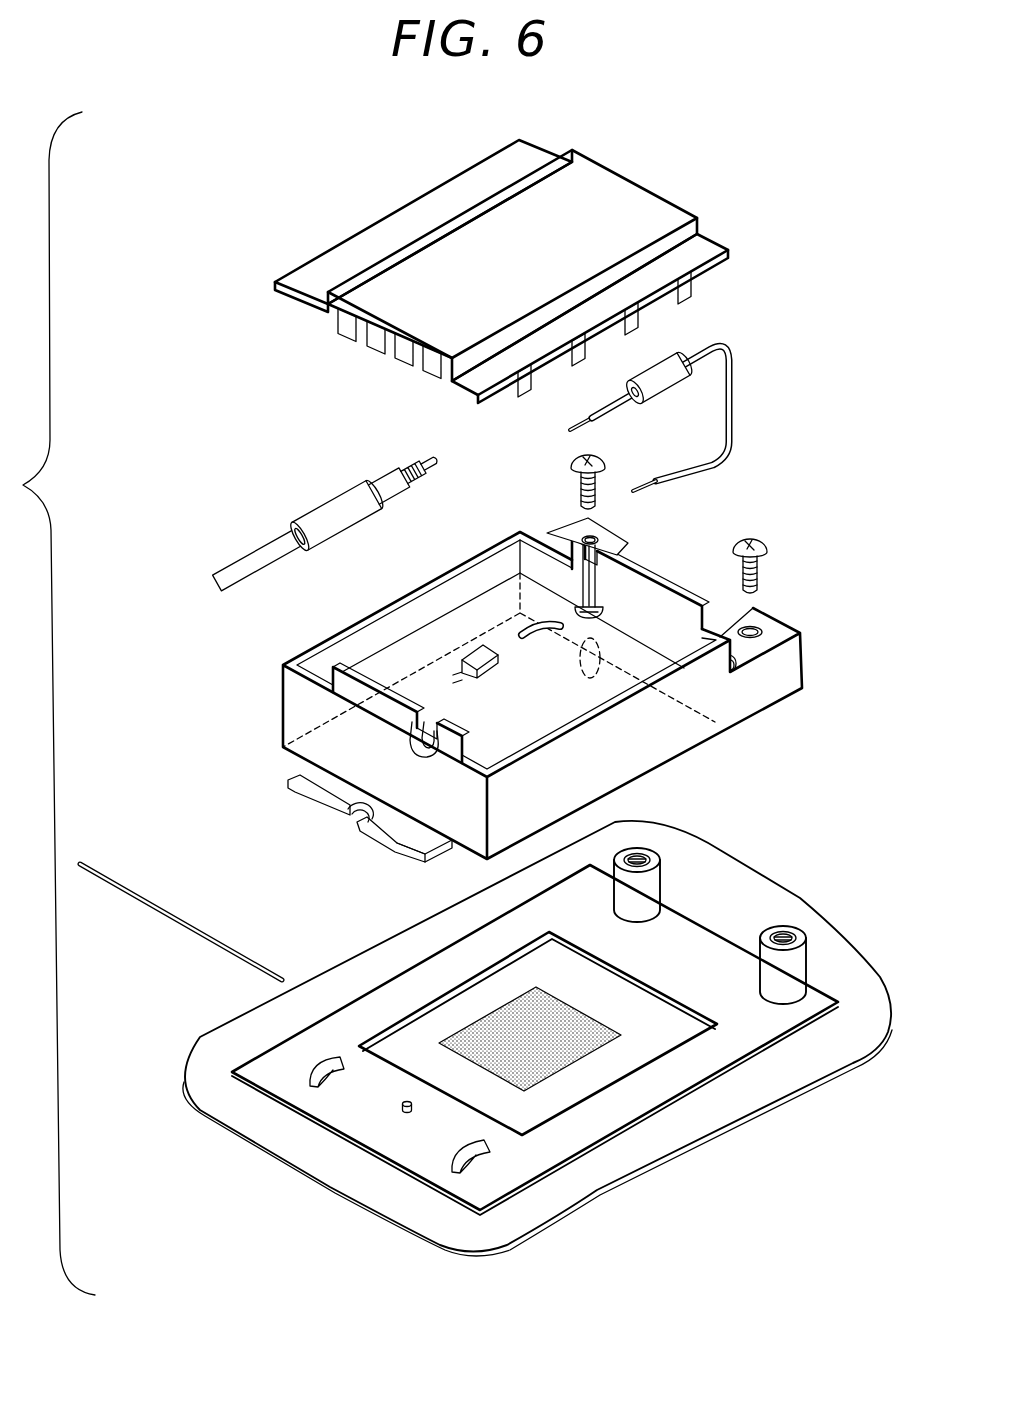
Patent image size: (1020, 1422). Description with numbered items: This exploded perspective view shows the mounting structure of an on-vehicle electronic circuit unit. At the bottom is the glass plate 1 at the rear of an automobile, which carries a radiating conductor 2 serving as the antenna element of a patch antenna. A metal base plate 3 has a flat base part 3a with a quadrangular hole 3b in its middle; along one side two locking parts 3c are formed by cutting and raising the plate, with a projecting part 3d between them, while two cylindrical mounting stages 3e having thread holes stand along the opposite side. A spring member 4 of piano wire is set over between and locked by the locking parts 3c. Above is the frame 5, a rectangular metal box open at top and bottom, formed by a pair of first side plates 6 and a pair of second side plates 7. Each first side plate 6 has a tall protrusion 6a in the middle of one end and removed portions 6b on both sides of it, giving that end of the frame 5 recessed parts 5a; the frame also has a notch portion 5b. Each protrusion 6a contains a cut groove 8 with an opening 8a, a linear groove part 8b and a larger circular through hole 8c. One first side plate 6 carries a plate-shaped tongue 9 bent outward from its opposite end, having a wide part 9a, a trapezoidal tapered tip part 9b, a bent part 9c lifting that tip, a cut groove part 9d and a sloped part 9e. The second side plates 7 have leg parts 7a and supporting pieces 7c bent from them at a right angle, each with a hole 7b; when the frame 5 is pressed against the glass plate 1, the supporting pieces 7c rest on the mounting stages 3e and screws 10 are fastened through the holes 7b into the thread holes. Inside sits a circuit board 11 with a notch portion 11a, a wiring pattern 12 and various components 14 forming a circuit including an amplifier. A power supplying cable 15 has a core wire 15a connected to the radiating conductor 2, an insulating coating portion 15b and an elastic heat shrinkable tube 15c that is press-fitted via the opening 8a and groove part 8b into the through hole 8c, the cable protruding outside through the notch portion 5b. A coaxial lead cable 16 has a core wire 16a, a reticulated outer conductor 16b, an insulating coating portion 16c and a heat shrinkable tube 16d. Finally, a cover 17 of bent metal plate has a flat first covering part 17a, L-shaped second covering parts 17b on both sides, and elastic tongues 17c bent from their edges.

The glass plate 1 is at (518, 1054).
The radiating conductor 2 is at (586, 1025).
The base plate 3 is at (518, 1056).
The base part 3a is at (649, 1094).
The quadrangular hole 3b is at (597, 1081).
The locking parts 3c is at (306, 1062).
The projecting part 3d is at (402, 1109).
The mounting stages 3e is at (653, 882).
The spring member 4 is at (168, 912).
The frame 5 is at (534, 661).
The recessed parts 5a is at (312, 663).
The notch portion 5b is at (588, 664).
The first side plates 6 is at (501, 647).
The protrusion 6a is at (377, 680).
The removed portion 6b is at (560, 548).
The second side plates 7 is at (677, 633).
The leg parts 7a is at (777, 688).
The holes 7b is at (790, 634).
The supporting pieces 7c is at (805, 640).
The cut grooves 8 is at (501, 646).
The opening 8a is at (596, 538).
The groove part 8b is at (581, 580).
The through hole 8c is at (605, 618).
The tongue 9 is at (329, 849).
The wide part 9a is at (428, 857).
The tapered tip part 9b is at (322, 815).
The bent part 9c is at (305, 790).
The cut groove part 9d is at (368, 834).
The sloped part 9e is at (334, 817).
The screws 10 is at (570, 463).
The circuit board 11 is at (437, 637).
The notch portion 11a is at (583, 610).
The wiring pattern 12 is at (520, 617).
The components 14 is at (487, 665).
The power supplying cable 15 is at (662, 403).
The core wire 15a is at (590, 412).
The insulating coating portion 15b is at (719, 446).
The heat shrinkable tube 15c is at (665, 395).
The lead cable 16 is at (335, 506).
The core wire 16a is at (429, 463).
The outer conductor 16b is at (413, 472).
The insulating coating portion 16c is at (388, 486).
The heat shrinkable tube 16d is at (337, 515).
The cover 17 is at (542, 235).
The first covering part 17a is at (633, 193).
The second covering part 17b is at (463, 190).
The elastic tongues 17c is at (637, 323).